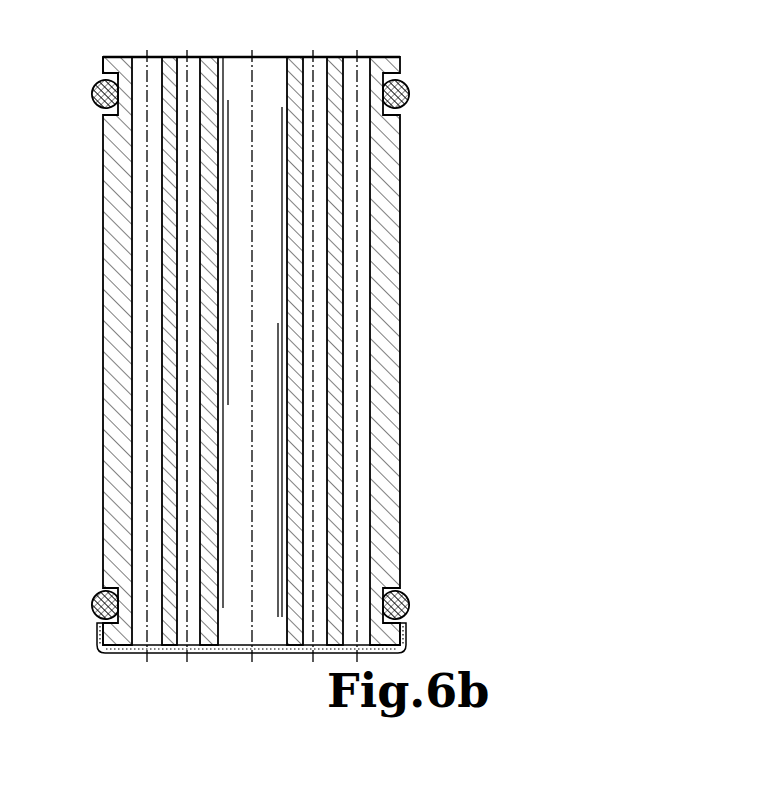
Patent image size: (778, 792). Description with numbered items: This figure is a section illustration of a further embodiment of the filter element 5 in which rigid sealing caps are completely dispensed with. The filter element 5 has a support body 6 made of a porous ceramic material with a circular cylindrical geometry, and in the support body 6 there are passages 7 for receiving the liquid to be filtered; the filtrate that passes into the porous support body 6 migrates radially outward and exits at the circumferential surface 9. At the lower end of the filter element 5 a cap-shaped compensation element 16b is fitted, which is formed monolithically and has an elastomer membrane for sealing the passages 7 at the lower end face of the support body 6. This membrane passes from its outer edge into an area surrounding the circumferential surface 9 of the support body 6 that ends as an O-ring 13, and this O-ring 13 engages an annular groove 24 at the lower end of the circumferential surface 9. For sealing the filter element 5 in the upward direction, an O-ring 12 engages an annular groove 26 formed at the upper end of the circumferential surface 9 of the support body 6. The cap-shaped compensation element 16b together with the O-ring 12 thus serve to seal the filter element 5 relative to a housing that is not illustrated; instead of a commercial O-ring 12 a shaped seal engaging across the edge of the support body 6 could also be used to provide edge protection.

The filter element 5 is at (432, 138).
The support body 6 is at (120, 302).
The passages 7 is at (158, 55).
The circumferential surface 9 is at (400, 295).
The O-ring 12 is at (95, 82).
The O-ring 13 is at (92, 594).
The lower cap-shaped ice compensation element 16b is at (420, 636).
The annular groove 24 is at (412, 587).
The annular groove 26 is at (92, 70).